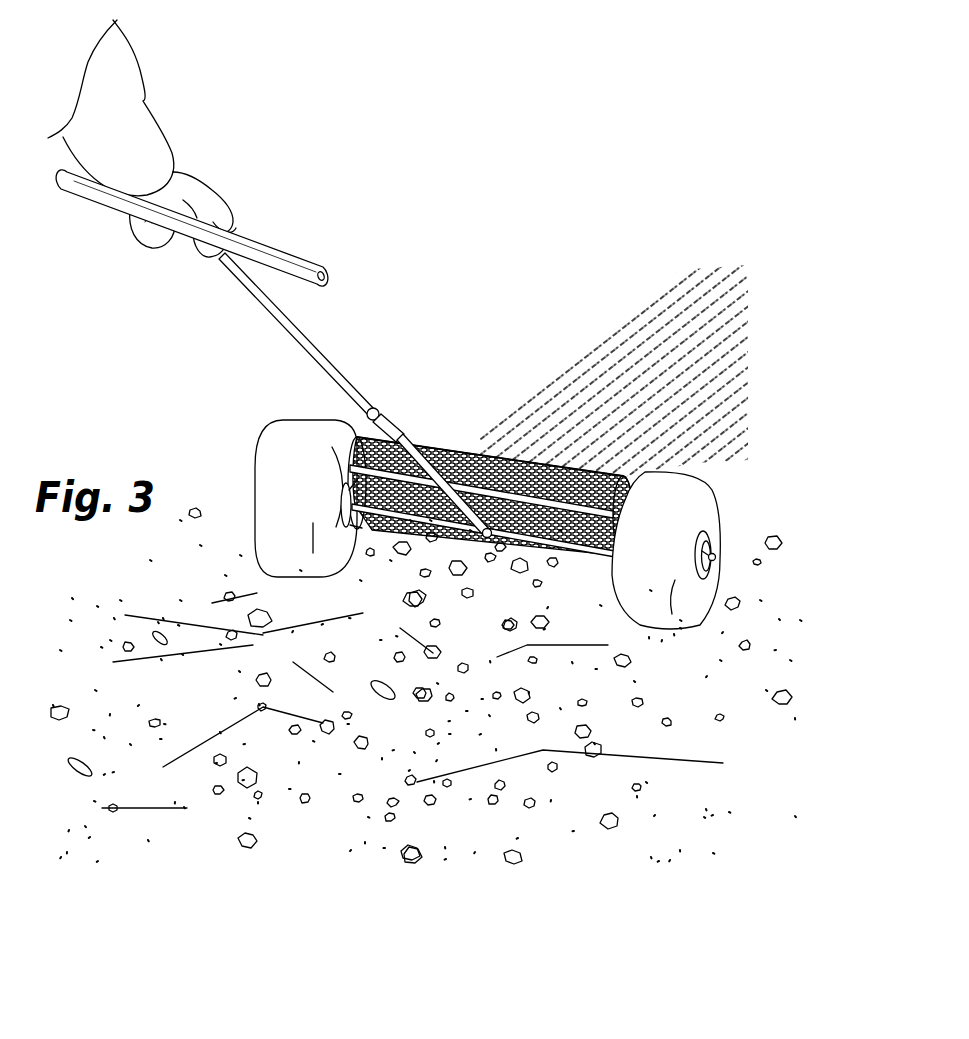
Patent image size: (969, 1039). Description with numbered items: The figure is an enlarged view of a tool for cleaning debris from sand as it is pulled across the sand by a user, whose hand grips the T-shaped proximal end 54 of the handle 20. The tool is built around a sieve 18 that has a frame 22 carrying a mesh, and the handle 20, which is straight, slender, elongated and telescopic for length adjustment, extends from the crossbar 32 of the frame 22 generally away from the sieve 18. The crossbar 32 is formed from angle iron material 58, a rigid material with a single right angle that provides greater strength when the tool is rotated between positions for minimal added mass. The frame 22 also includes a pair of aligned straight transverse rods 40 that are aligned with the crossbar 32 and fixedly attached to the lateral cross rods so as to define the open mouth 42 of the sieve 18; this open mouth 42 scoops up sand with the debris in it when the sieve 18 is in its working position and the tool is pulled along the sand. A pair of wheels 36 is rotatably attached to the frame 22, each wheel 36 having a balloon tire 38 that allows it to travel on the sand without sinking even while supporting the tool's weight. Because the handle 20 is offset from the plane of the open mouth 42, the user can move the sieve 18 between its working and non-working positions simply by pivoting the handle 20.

The sieve 18 is at (473, 417).
The handle 20 is at (337, 363).
The frame 22 is at (577, 503).
The crossbar 32 is at (606, 535).
The wheels 36 is at (714, 554).
The balloon tire 38 is at (707, 530).
The straight transverse rods 40 is at (455, 452).
The open mouth 42 is at (543, 513).
The proximal end 54 is at (257, 238).
The angle iron material 58 is at (392, 513).